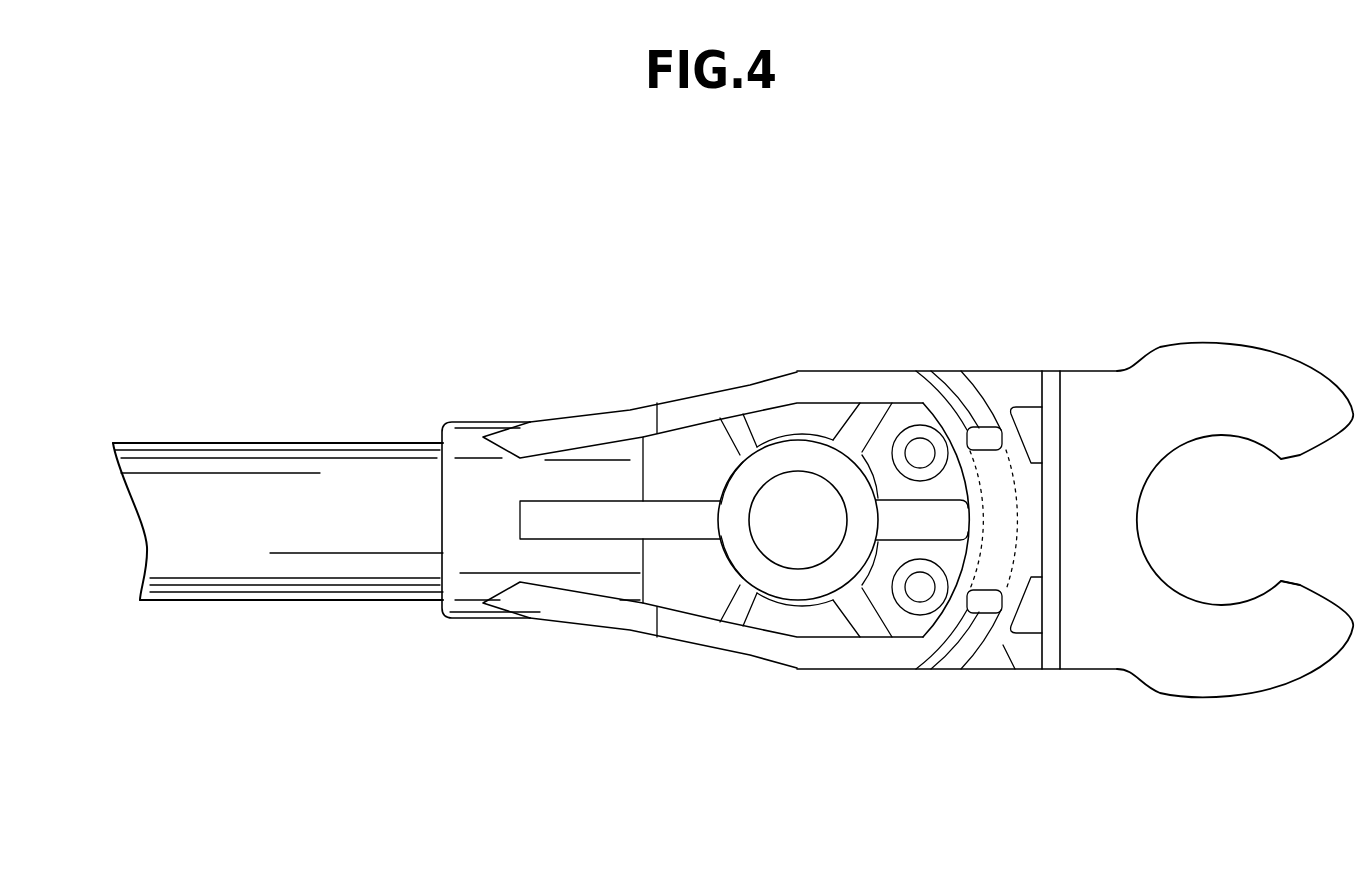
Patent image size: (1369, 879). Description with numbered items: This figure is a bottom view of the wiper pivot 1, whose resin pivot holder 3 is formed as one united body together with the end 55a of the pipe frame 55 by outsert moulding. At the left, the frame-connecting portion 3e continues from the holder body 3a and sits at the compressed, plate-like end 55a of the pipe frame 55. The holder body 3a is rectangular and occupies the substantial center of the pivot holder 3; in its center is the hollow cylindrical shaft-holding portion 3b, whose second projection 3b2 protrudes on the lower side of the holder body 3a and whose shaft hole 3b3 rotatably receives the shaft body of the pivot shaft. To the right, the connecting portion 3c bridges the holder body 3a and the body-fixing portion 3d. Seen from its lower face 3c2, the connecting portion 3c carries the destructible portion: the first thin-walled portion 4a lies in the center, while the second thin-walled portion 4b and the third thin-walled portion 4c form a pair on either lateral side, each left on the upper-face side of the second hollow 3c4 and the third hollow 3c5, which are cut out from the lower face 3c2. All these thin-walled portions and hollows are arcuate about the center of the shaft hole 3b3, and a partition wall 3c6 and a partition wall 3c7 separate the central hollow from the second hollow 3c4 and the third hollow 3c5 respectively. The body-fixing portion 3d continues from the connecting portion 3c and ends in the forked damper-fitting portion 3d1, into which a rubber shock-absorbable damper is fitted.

The wiper pivot 1 is at (1120, 174).
The pipe frame 55 is at (165, 441).
The end of the pipe frame 55a is at (415, 580).
The pivot holder 3 is at (852, 671).
The frame-connecting portion 3e is at (467, 421).
The holder body 3a is at (707, 650).
The shaft-holding portion 3b is at (722, 420).
The second projection 3b2 is at (796, 596).
The shaft hole 3b3 is at (815, 488).
The connecting portion 3c is at (905, 671).
The lower face of the connecting portion 3c2 is at (1017, 654).
The second hollow 3c4 is at (962, 650).
The third hollow 3c5 is at (955, 398).
The partition wall 3c6 is at (990, 640).
The partition wall 3c7 is at (997, 420).
The first thin-walled portion 4a is at (1007, 503).
The second thin-walled portion 4b is at (987, 622).
The third thin-walled portion 4c is at (967, 426).
The body-fixing portion 3d is at (1317, 372).
The damper-fitting portion 3d1 is at (1263, 612).